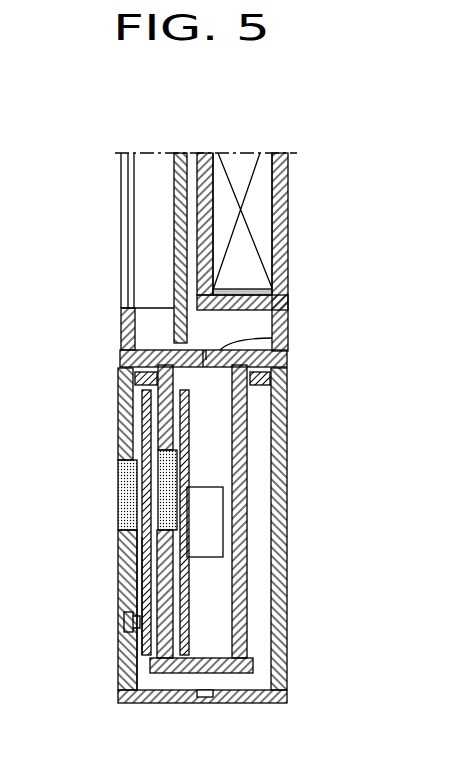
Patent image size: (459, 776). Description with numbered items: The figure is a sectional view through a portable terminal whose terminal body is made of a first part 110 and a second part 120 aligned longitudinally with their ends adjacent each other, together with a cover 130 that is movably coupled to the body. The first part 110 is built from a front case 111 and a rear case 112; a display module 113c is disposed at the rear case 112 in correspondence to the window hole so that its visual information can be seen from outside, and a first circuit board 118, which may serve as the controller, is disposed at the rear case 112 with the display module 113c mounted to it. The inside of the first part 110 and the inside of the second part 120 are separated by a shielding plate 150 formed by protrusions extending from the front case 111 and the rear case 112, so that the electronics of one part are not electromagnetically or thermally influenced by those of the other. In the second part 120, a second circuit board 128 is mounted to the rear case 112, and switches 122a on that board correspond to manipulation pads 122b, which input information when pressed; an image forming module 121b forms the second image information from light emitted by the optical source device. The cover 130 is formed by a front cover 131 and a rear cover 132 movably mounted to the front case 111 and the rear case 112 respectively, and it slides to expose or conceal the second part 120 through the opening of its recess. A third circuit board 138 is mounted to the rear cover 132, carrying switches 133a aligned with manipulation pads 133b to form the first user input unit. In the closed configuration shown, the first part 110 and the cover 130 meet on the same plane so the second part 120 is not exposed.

The first part 110 is at (293, 218).
The front case 111 is at (120, 330).
The rear case 112 is at (288, 310).
The display module 113c is at (147, 230).
The first circuit board 118 is at (174, 273).
The second part 120 is at (203, 519).
The image forming module 121b is at (218, 525).
The switches 122a is at (182, 460).
The manipulation pads 122b is at (160, 456).
The second circuit board 128 is at (187, 605).
The cover 130 is at (202, 570).
The front cover 131 is at (166, 705).
The rear cover 132 is at (247, 705).
The switches 133a is at (138, 508).
The manipulation pads 133b is at (120, 473).
The third circuit board 138 is at (138, 578).
The shielding plate 150 is at (260, 343).